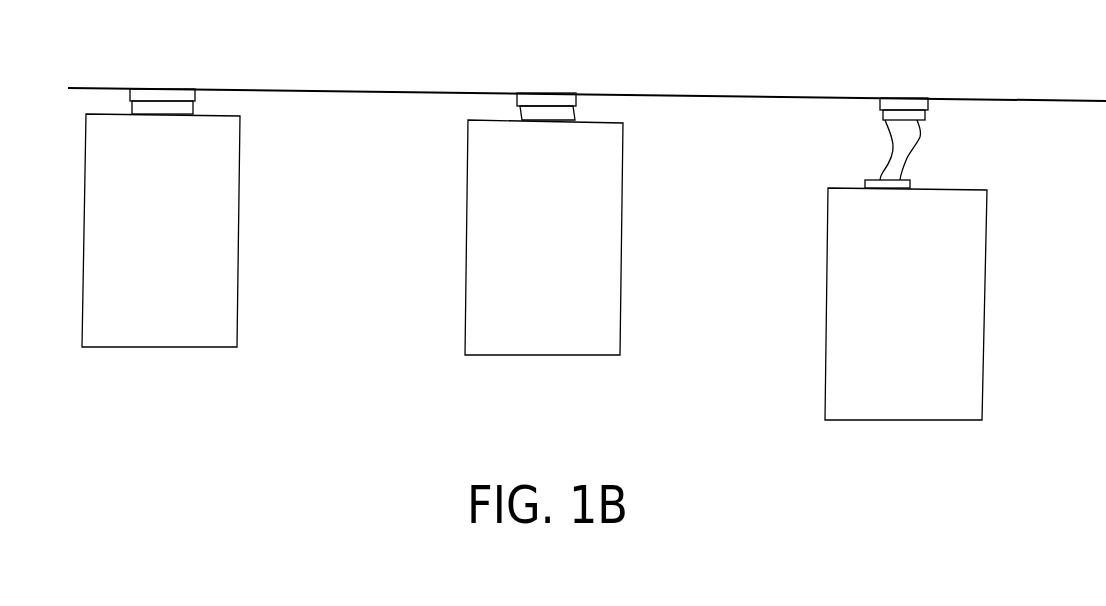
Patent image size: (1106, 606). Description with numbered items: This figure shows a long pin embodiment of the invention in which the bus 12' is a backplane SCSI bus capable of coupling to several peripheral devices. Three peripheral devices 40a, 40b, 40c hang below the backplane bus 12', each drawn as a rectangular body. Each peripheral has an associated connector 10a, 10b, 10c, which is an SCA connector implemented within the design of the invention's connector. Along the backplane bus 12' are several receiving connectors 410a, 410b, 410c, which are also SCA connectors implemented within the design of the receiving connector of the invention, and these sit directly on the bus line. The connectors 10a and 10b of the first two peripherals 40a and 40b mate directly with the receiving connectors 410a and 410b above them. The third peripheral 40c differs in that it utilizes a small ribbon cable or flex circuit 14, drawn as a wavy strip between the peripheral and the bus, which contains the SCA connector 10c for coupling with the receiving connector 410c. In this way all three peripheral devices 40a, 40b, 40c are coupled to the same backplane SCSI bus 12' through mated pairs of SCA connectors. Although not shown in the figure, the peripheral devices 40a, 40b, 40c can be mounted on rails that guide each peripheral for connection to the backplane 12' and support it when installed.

The backplane SCSI bus 12' is at (587, 70).
The receiving connector 410a is at (157, 89).
The receiving connector 410b is at (541, 95).
The receiving connector 410c is at (905, 99).
The connector 10a is at (167, 107).
The connector 10b is at (545, 117).
The connector 10c is at (882, 113).
The peripheral device 40a is at (177, 338).
The peripheral device 40b is at (542, 347).
The peripheral device 40c is at (900, 412).
The ribbon cable or flex circuit 14 is at (913, 152).